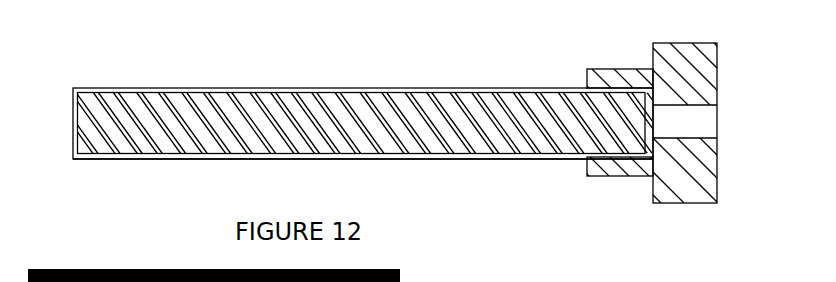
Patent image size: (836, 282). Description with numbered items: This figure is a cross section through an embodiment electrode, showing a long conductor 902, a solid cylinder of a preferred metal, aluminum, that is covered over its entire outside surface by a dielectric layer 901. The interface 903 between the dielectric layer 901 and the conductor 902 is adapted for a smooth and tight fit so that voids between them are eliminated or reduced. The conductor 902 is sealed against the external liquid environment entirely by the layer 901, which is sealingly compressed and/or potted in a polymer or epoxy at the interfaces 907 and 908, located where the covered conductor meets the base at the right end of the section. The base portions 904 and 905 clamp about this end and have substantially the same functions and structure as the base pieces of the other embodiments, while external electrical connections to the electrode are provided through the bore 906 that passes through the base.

The dielectric layer 901 is at (172, 88).
The conductor 902 is at (204, 138).
The interface between layer and conductor 903 is at (409, 157).
The base portion 904 is at (621, 172).
The base portion 905 is at (693, 192).
The bore 906 is at (688, 123).
The interface 907 is at (655, 94).
The interface 908 is at (617, 83).